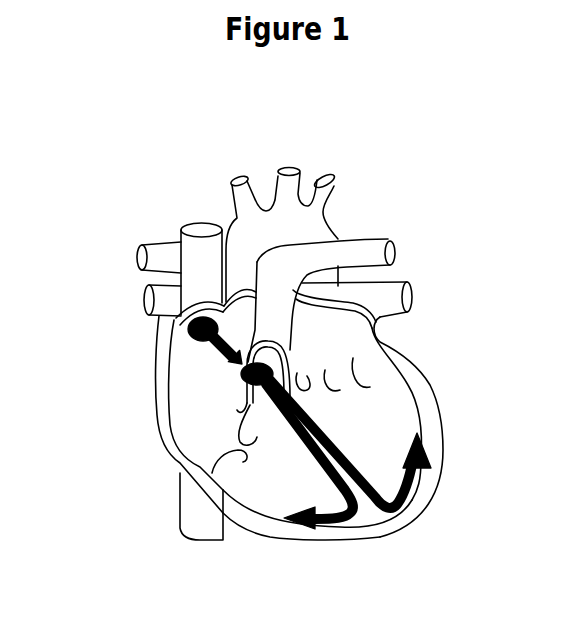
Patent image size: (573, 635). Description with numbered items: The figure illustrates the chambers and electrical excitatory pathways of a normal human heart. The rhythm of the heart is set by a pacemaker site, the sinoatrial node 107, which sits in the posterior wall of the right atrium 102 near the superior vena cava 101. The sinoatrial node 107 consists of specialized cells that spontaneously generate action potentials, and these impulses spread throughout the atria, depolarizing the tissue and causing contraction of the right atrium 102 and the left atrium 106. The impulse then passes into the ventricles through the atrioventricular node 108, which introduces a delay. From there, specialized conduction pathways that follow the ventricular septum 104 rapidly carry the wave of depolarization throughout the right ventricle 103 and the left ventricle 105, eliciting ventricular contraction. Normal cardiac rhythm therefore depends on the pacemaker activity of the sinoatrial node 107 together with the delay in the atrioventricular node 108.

The superior vena cava 101 is at (190, 273).
The right atrium 102 is at (195, 382).
The right ventricle 103 is at (270, 483).
The ventricular septum 104 is at (332, 453).
The left ventricle 105 is at (373, 452).
The left atrium 106 is at (330, 333).
The sinoatrial node 107 is at (188, 334).
The atrioventricular node 108 is at (273, 380).